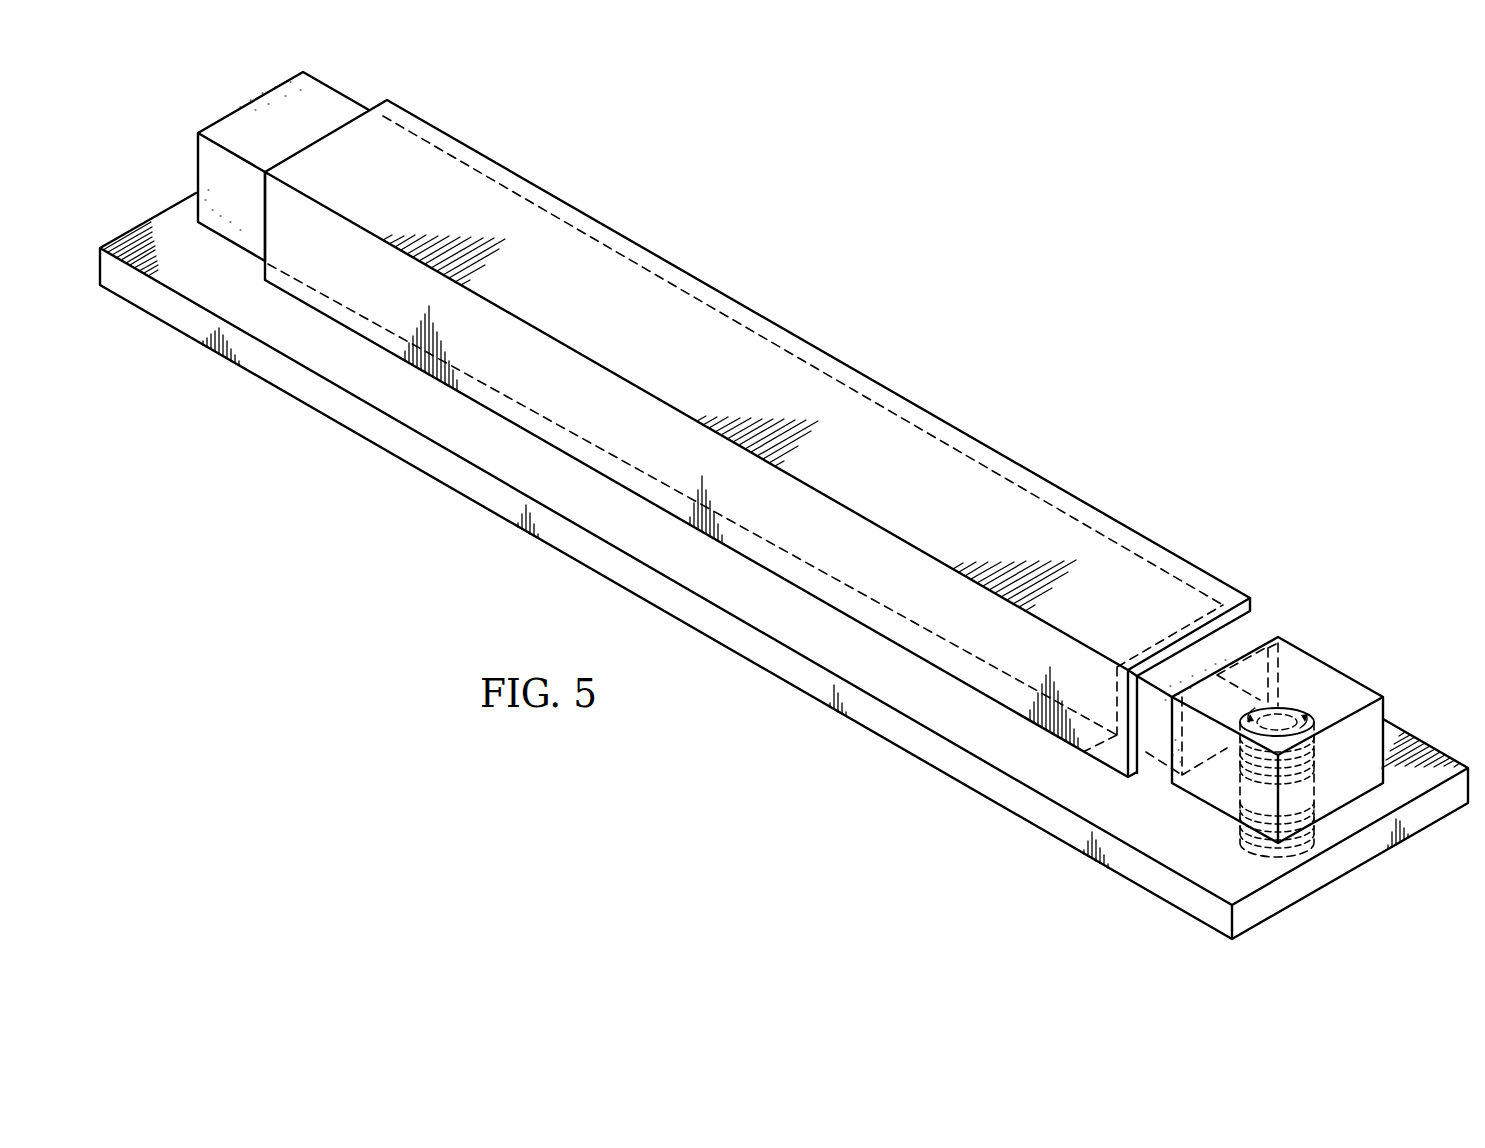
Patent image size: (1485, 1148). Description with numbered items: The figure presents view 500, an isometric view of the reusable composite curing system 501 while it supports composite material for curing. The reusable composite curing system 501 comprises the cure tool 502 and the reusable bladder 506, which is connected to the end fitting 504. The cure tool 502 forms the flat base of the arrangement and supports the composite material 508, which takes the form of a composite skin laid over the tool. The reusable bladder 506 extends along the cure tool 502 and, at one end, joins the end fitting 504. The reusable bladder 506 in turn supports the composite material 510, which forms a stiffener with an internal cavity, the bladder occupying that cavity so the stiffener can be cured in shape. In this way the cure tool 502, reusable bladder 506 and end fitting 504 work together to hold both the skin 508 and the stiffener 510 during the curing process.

The view 500 is at (934, 181).
The reusable composite curing system 501 is at (942, 295).
The cure tool 502 is at (614, 582).
The end fitting 504 is at (1298, 660).
The reusable bladder 506 is at (223, 117).
The composite material 508 is at (690, 273).
The composite material 510 is at (943, 420).